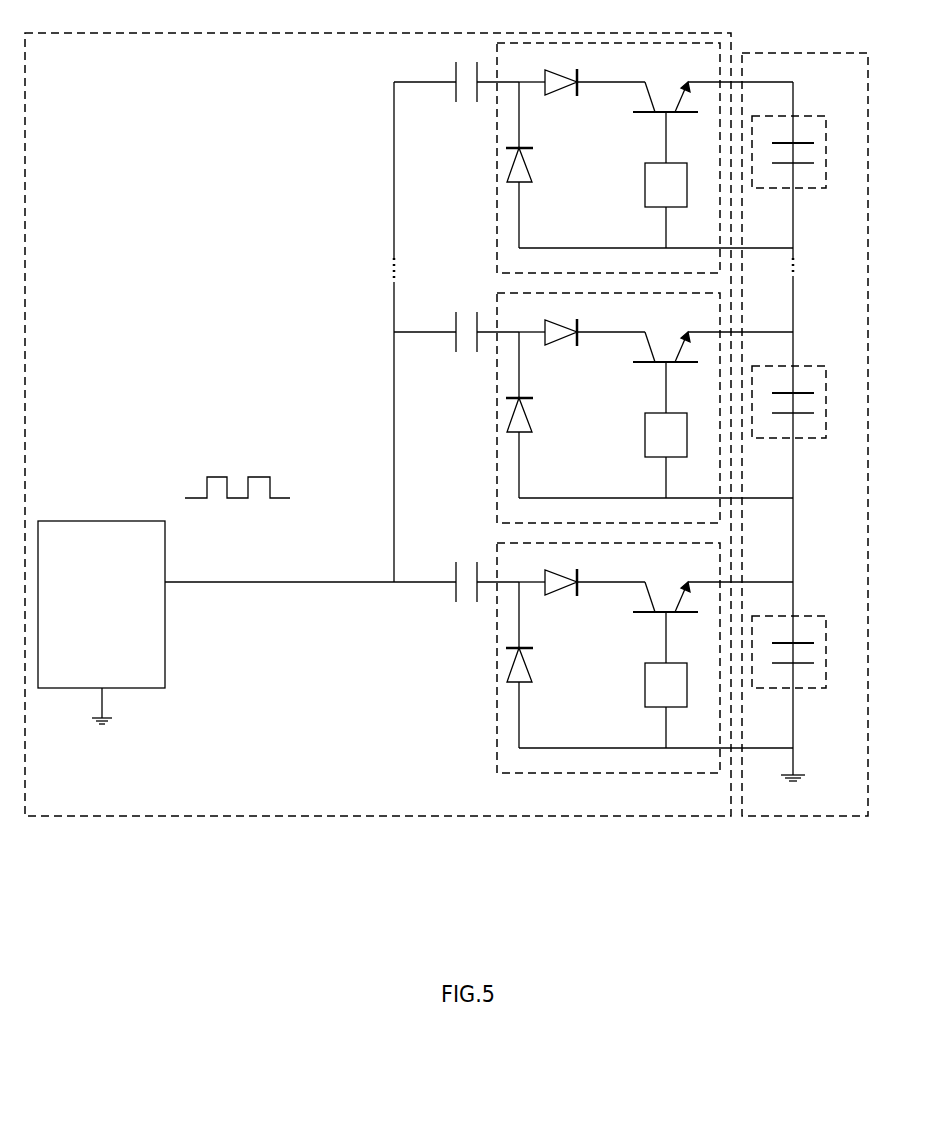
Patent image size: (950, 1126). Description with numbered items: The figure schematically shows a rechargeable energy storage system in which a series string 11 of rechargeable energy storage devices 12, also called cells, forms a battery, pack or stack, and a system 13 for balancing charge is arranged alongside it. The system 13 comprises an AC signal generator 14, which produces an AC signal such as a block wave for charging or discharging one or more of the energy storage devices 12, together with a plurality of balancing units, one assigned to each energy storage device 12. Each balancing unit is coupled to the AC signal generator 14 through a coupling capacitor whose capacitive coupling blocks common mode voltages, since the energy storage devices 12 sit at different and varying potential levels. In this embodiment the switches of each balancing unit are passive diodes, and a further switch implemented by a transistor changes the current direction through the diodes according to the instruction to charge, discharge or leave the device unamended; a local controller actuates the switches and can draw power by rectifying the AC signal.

The series string 11 is at (805, 823).
The energy storage device 12 is at (808, 431).
The system for balancing charge 13 is at (310, 822).
The AC signal generator 14 is at (101, 622).